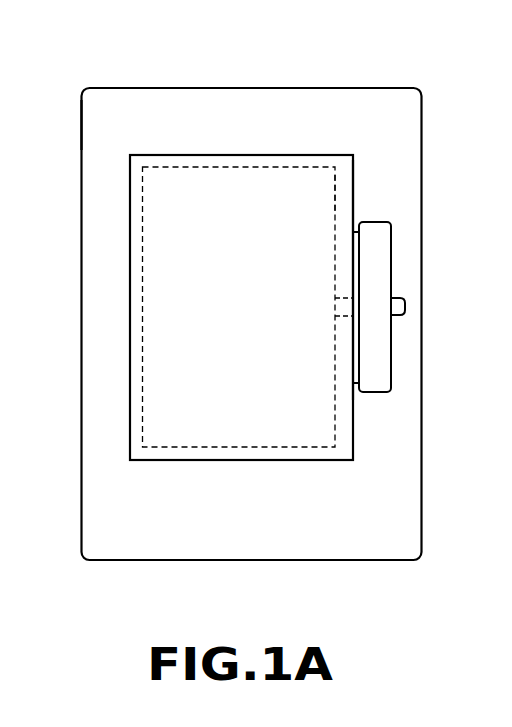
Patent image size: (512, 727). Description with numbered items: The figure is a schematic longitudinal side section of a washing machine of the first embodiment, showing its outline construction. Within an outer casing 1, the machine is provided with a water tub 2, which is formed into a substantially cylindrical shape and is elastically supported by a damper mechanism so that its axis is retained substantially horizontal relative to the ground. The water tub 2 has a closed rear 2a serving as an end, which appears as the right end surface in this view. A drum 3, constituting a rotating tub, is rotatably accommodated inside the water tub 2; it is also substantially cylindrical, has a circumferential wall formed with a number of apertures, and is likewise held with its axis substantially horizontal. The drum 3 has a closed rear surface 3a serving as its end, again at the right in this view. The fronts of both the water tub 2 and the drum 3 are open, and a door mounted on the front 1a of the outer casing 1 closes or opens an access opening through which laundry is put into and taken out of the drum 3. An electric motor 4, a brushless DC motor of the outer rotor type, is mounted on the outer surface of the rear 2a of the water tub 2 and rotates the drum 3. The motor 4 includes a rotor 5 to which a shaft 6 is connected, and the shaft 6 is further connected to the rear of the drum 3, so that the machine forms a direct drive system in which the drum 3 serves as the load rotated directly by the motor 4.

The outer casing 1 is at (265, 88).
The front of outer casing 1a is at (81, 125).
The water tub 2 is at (235, 155).
The closed rear of water tub 2a is at (353, 167).
The drum 3 is at (187, 155).
The closed rear surface of drum 3a is at (335, 193).
The electric motor 4 is at (393, 239).
The rotor 5 is at (385, 268).
The shaft 6 is at (405, 306).